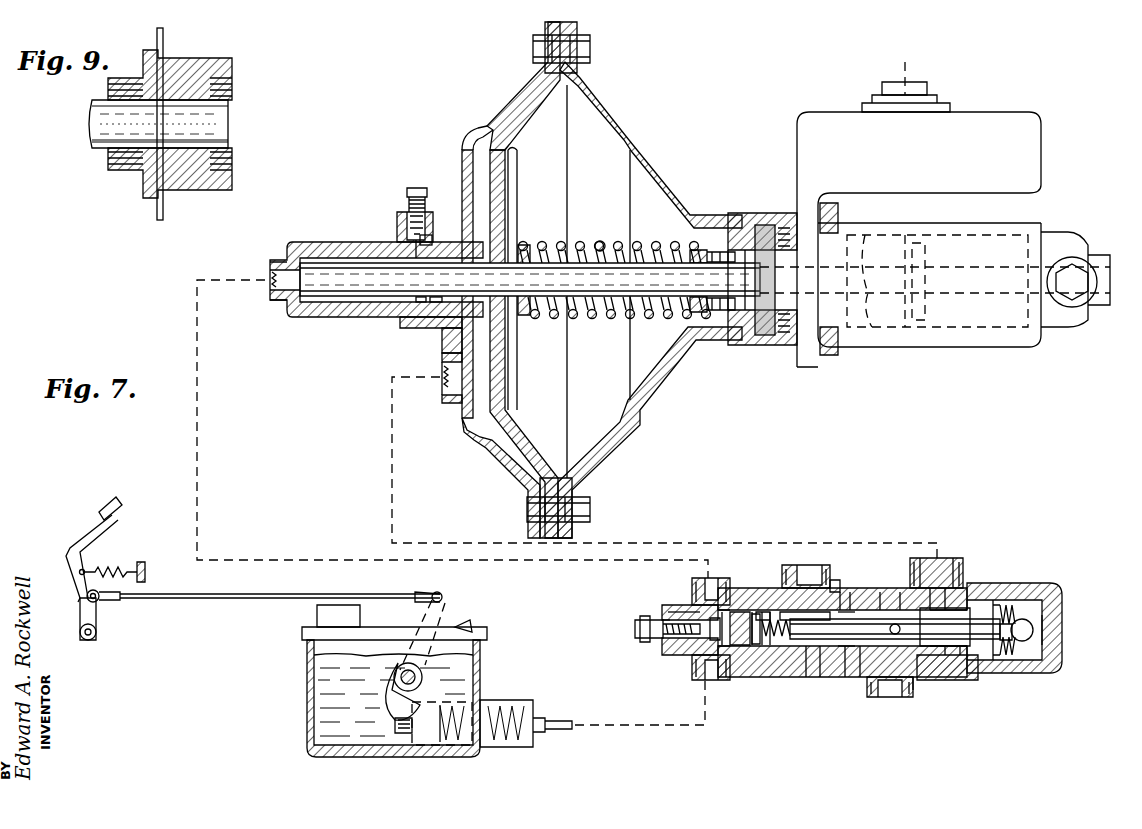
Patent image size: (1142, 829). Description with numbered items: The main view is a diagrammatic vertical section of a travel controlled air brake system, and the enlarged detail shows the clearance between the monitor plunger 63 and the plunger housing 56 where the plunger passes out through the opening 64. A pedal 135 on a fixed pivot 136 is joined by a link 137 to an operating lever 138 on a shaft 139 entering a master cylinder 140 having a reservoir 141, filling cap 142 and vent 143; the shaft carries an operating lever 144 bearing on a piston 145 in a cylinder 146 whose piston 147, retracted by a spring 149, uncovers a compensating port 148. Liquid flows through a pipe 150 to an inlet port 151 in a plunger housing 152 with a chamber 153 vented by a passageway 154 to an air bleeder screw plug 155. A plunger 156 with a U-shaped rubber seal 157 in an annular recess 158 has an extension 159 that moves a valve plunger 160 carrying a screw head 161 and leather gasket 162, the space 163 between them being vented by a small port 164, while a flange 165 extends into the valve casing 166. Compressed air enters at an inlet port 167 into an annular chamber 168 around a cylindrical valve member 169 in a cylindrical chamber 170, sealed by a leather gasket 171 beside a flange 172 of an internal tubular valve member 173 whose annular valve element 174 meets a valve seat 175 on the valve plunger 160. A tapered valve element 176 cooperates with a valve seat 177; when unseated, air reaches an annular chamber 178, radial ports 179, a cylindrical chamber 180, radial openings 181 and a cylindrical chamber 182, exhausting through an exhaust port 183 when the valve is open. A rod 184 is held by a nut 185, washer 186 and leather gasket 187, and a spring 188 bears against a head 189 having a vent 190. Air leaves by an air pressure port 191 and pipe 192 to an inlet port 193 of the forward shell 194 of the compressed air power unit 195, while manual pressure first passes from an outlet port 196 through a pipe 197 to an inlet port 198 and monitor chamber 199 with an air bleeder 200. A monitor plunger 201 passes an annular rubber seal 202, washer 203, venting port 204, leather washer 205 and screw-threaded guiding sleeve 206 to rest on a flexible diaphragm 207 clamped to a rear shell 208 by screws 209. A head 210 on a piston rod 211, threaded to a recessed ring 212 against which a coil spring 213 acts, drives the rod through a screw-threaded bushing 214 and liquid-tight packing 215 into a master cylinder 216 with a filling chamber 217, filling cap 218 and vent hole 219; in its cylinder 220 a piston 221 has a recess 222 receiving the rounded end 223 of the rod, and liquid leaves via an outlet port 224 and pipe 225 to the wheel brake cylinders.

In FIG. 9, the plunger housing 56 is at (200, 62).
In FIG. 9, the monitor plunger 63 is at (112, 113).
In FIG. 9, the opening 64 is at (168, 100).
In FIG. 7, the pedal 135 is at (112, 512).
In FIG. 7, the fixed pivot 136 is at (88, 641).
In FIG. 7, the link 137 is at (222, 600).
In FIG. 7, the operating lever 138 is at (445, 612).
In FIG. 7, the shaft 139 is at (416, 680).
In FIG. 7, the master cylinder 140 is at (308, 647).
In FIG. 7, the reservoir 141 is at (315, 706).
In FIG. 7, the filling cap 142 is at (317, 614).
In FIG. 7, the vent 143 is at (468, 628).
In FIG. 7, the operating lever 144 is at (388, 688).
In FIG. 7, the piston 145 is at (395, 728).
In FIG. 7, the cylinder 146 is at (510, 700).
In FIG. 7, the piston 147 is at (461, 711).
In FIG. 7, the compensating port 148 is at (466, 702).
In FIG. 7, the spring 149 is at (494, 748).
In FIG. 7, the pipe 150 is at (640, 735).
In FIG. 7, the inlet port 151 is at (706, 680).
In FIG. 7, the plunger housing 152 is at (690, 606).
In FIG. 7, the chamber 153 is at (690, 655).
In FIG. 7, the passageway 154 is at (668, 618).
In FIG. 7, the air bleeder screw plug 155 is at (650, 641).
In FIG. 7, the plunger 156 is at (744, 678).
In FIG. 7, the U-shaped rubber seal 157 is at (722, 656).
In FIG. 7, the annular recess 158 is at (741, 628).
In FIG. 7, the extension 159 is at (739, 616).
In FIG. 7, the valve plunger 160 is at (775, 656).
In FIG. 7, the screw head 161 is at (766, 590).
In FIG. 7, the leather gasket 162 is at (772, 590).
In FIG. 7, the space 163 is at (756, 656).
In FIG. 7, the small port 164 is at (758, 605).
In FIG. 7, the flange 165 is at (805, 602).
In FIG. 7, the valve casing 166 is at (845, 680).
In FIG. 7, the inlet port 167 is at (884, 697).
In FIG. 7, the annular chamber 168 is at (905, 587).
In FIG. 7, the cylindrical valve member 169 is at (890, 660).
In FIG. 7, the cylindrical chamber 170 is at (808, 680).
In FIG. 7, the leather gasket 171 is at (826, 660).
In FIG. 7, the flange 172 is at (834, 580).
In FIG. 7, the internal tubular valve member 173 is at (868, 590).
In FIG. 7, the annular valve element 174 is at (839, 615).
In FIG. 7, the valve seat 175 is at (840, 639).
In FIG. 7, the tapered valve element 176 is at (926, 680).
In FIG. 7, the valve seat 177 is at (912, 682).
In FIG. 7, the annular chamber 178 is at (938, 662).
In FIG. 7, the radial ports 179 is at (950, 656).
In FIG. 7, the cylindrical chamber 180 is at (968, 658).
In FIG. 7, the radial openings 181 is at (895, 629).
In FIG. 7, the cylindrical chamber 182 is at (852, 596).
In FIG. 7, the exhaust port 183 is at (800, 565).
In FIG. 7, the rod 184 is at (968, 588).
In FIG. 7, the nut 185 is at (1034, 636).
In FIG. 7, the washer 186 is at (996, 604).
In FIG. 7, the leather gasket 187 is at (1000, 660).
In FIG. 7, the spring 188 is at (1025, 600).
In FIG. 7, the head 189 is at (1038, 673).
In FIG. 7, the vent 190 is at (1062, 626).
In FIG. 7, the air pressure port 191 is at (942, 558).
In FIG. 7, the pipe 192 is at (392, 460).
In FIG. 7, the inlet port 193 is at (442, 388).
In FIG. 7, the forward shell 194 is at (476, 438).
In FIG. 7, the compressed air power unit 195 is at (468, 102).
In FIG. 7, the outlet port 196 is at (700, 580).
In FIG. 7, the pipe 197 is at (197, 330).
In FIG. 7, the inlet port 198 is at (270, 275).
In FIG. 7, the monitor chamber 199 is at (312, 244).
In FIG. 7, the air bleeder 200 is at (407, 204).
In FIG. 7, the monitor plunger 201 is at (345, 285).
In FIG. 7, the annular rubber seal 202 is at (430, 300).
In FIG. 7, the washer 203 is at (425, 302).
In FIG. 7, the venting port 204 is at (440, 328).
In FIG. 7, the leather washer 205 is at (432, 238).
In FIG. 7, the screw-threaded guiding sleeve 206 is at (452, 334).
In FIG. 7, the flexible diaphragm 207 is at (540, 418).
In FIG. 7, the rear shell 208 is at (608, 440).
In FIG. 7, the screws 209 is at (578, 48).
In FIG. 7, the head 210 is at (517, 362).
In FIG. 7, the piston rod 211 is at (600, 318).
In FIG. 7, the recessed ring 212 is at (530, 244).
In FIG. 7, the coil spring 213 is at (600, 241).
In FIG. 7, the screw-threaded bushing 214 is at (748, 346).
In FIG. 7, the liquid-tight packing 215 is at (760, 220).
In FIG. 7, the master cylinder 216 is at (1014, 345).
In FIG. 7, the filling chamber 217 is at (1033, 150).
In FIG. 7, the filling cap 218 is at (872, 88).
In FIG. 7, the vent hole 219 is at (904, 66).
In FIG. 7, the cylinder 220 is at (962, 315).
In FIG. 7, the piston 221 is at (898, 320).
In FIG. 7, the recess 222 is at (868, 325).
In FIG. 7, the rounded end 223 is at (868, 260).
In FIG. 7, the outlet port 224 is at (1106, 308).
In FIG. 7, the pipe 225 is at (1118, 262).